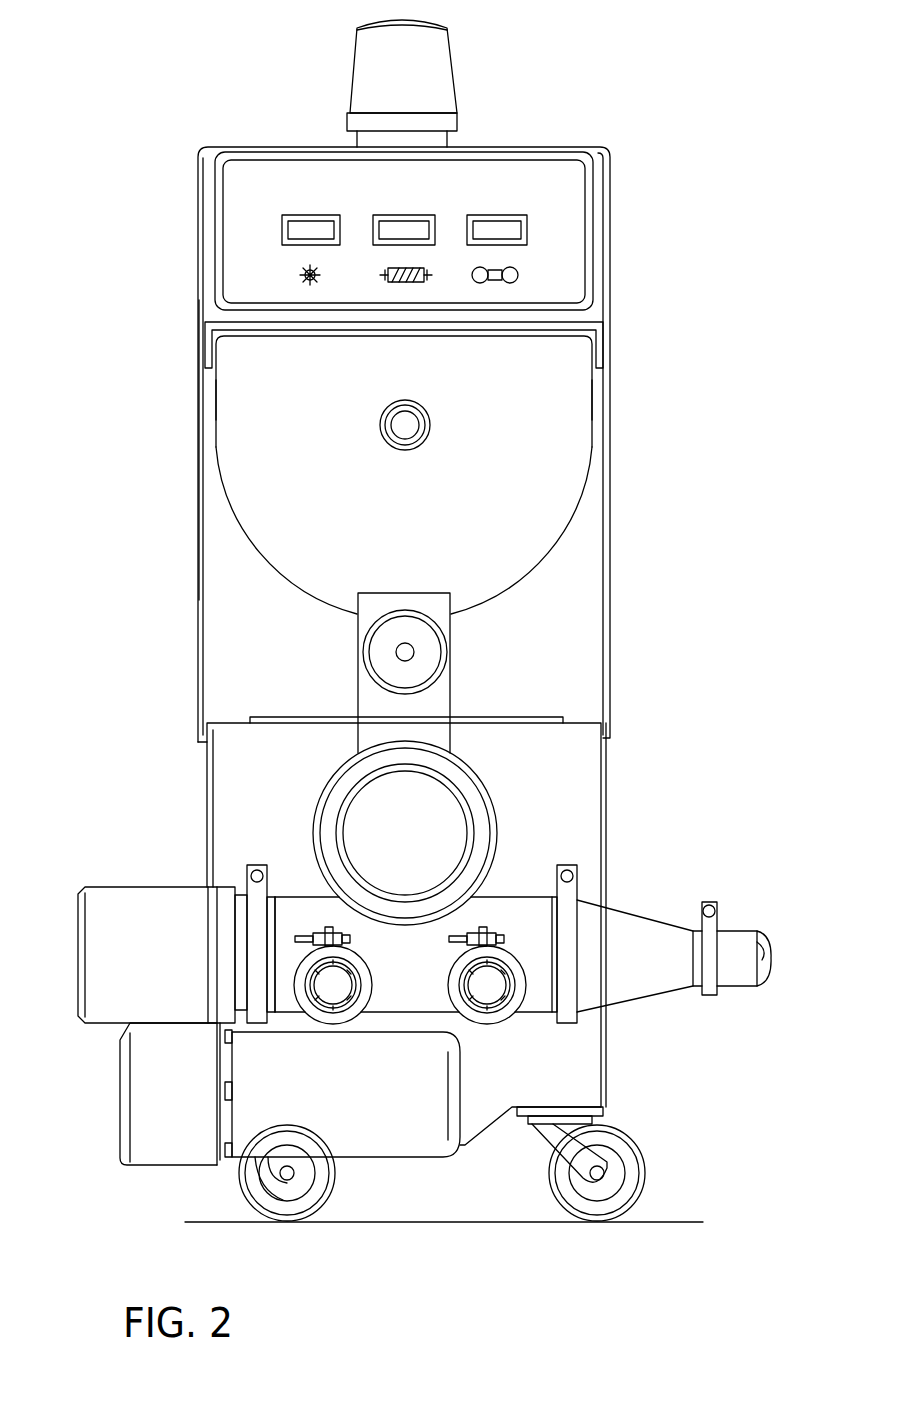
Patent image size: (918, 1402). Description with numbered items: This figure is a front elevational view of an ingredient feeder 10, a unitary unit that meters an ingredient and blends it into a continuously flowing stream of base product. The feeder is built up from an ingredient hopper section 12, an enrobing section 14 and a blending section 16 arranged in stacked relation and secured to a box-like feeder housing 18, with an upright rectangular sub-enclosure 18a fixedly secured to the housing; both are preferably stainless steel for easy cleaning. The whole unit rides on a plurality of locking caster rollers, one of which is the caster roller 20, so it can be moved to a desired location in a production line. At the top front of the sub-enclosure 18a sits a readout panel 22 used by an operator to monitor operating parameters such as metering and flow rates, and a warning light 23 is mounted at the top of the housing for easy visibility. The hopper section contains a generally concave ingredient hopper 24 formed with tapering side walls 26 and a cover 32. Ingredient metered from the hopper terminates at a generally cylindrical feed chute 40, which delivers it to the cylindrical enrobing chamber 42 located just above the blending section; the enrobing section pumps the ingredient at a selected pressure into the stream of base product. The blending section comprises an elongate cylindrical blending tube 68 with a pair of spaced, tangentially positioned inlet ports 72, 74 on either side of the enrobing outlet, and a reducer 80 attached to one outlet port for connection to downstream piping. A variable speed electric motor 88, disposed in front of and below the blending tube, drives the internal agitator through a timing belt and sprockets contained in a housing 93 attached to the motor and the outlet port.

The ingredient feeder 10 is at (677, 137).
The ingredient hopper section 12 is at (192, 468).
The enrobing section 14 is at (305, 814).
The blending section 16 is at (537, 890).
The feeder housing 18 is at (231, 764).
The sub-enclosure 18a is at (199, 597).
The caster roller 20 is at (637, 1152).
The readout panel 22 is at (572, 232).
The warning light 23 is at (440, 53).
The ingredient hopper 24 is at (590, 475).
The tapering side walls 26 is at (216, 402).
The cover 32 is at (557, 325).
The feed chute 40 is at (452, 680).
The enrobing chamber 42 is at (497, 798).
The blending tube 68 is at (540, 1007).
The inlet port 72 is at (307, 993).
The inlet port 74 is at (505, 960).
The reducer 80 is at (653, 995).
The electric motor 88 is at (390, 1142).
The housing 93 is at (108, 915).